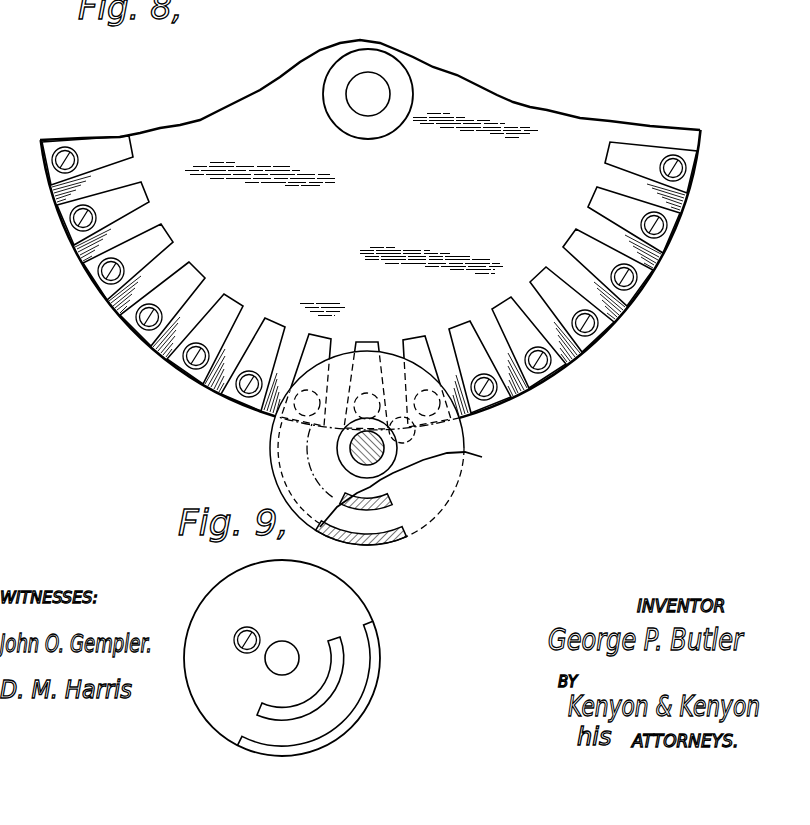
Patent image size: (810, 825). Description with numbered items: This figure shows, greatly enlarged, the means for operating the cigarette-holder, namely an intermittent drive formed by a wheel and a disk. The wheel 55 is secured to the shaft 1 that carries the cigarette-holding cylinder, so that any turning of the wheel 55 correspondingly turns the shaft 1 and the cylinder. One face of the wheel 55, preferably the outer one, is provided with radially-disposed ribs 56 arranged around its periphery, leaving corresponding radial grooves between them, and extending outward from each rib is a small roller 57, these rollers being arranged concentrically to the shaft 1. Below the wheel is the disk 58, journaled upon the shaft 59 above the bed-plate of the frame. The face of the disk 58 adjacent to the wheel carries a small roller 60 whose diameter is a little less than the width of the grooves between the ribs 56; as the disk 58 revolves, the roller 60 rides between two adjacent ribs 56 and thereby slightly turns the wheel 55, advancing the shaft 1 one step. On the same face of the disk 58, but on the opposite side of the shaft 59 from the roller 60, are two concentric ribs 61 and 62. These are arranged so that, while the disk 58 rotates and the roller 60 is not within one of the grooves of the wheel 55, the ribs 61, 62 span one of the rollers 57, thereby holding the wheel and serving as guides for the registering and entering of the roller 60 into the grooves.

In FIG. 8, the shaft 1 is at (377, 95).
In FIG. 8, the wheel 55 is at (370, 235).
In FIG. 8, the radially-disposed ribs 56 is at (187, 270).
In FIG. 8, the small roller 57 is at (143, 332).
In FIG. 8, the disk 58 is at (269, 452).
In FIG. 9, the disk 58 is at (282, 658).
In FIG. 8, the shaft 59 is at (383, 457).
In FIG. 9, the shaft 59 is at (298, 650).
In FIG. 8, the small roller 60 is at (413, 442).
In FIG. 9, the small roller 60 is at (238, 628).
In FIG. 8, the concentric rib 61 is at (392, 502).
In FIG. 9, the concentric rib 61 is at (262, 710).
In FIG. 8, the concentric rib 62 is at (407, 535).
In FIG. 9, the concentric rib 62 is at (243, 738).